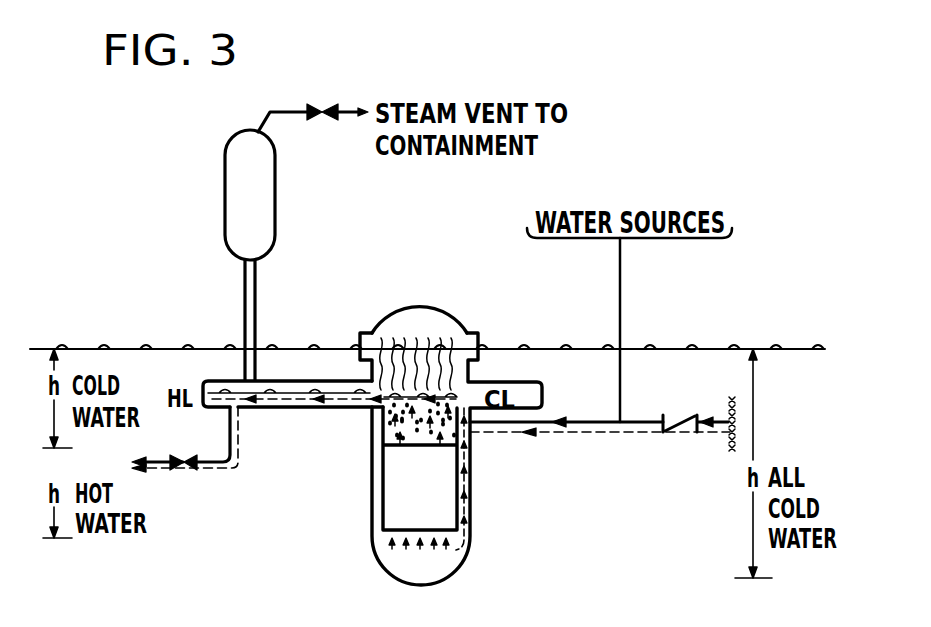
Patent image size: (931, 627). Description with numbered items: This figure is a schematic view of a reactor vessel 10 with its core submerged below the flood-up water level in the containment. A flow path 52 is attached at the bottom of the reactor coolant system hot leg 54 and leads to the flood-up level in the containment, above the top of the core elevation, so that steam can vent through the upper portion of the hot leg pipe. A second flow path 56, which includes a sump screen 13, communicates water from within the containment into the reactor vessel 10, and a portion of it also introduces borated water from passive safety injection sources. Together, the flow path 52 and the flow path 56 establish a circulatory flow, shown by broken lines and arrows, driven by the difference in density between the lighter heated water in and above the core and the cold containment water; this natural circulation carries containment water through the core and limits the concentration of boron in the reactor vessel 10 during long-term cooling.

The reactor vessel 10 is at (468, 543).
The sump screen 13 is at (727, 442).
The flow path 52 is at (215, 462).
The hot leg 54 is at (315, 380).
The flow path 56 is at (644, 421).